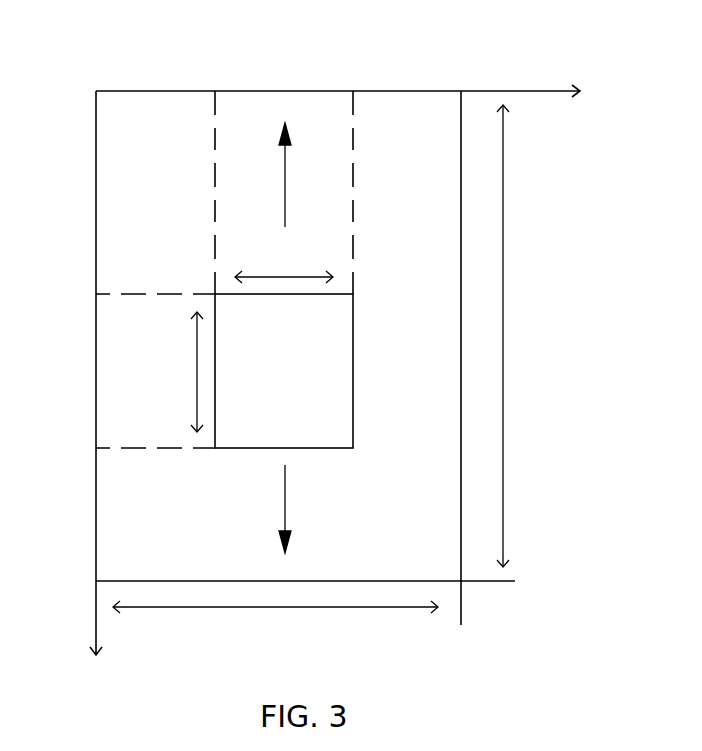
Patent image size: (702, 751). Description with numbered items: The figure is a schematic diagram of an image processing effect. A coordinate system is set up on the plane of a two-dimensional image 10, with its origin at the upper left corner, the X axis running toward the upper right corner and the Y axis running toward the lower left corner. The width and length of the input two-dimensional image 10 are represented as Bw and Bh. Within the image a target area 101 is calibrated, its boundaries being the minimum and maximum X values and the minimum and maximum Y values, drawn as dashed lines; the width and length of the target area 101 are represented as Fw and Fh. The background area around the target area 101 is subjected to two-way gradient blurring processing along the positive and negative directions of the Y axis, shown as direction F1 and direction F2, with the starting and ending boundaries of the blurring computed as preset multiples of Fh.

The two-dimensional image 10 is at (419, 91).
The target area 101 is at (256, 338).
The length of the input two-dimensional image Bh is at (528, 336).
The width of the input two-dimensional image Bw is at (275, 618).
The width of the target area Fw is at (284, 261).
The length of the target area Fh is at (181, 372).
The direction F1 is at (301, 175).
The direction F2 is at (301, 509).